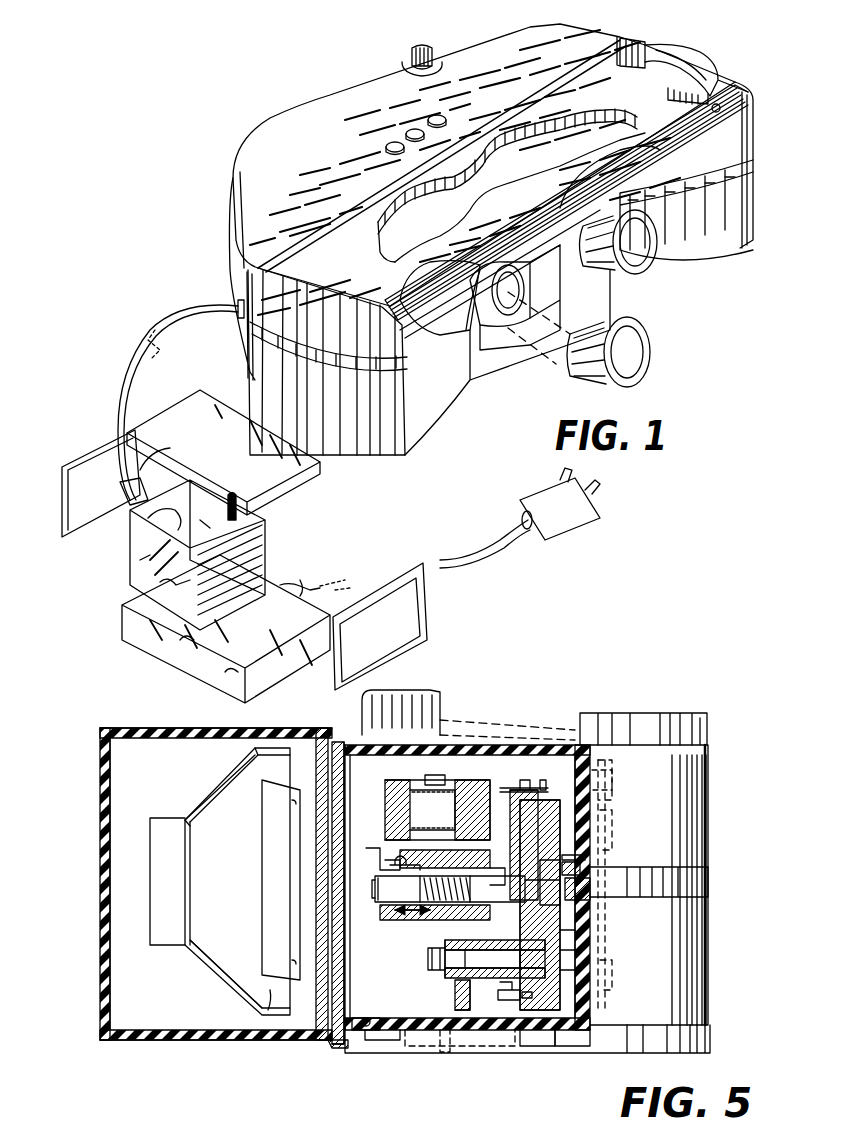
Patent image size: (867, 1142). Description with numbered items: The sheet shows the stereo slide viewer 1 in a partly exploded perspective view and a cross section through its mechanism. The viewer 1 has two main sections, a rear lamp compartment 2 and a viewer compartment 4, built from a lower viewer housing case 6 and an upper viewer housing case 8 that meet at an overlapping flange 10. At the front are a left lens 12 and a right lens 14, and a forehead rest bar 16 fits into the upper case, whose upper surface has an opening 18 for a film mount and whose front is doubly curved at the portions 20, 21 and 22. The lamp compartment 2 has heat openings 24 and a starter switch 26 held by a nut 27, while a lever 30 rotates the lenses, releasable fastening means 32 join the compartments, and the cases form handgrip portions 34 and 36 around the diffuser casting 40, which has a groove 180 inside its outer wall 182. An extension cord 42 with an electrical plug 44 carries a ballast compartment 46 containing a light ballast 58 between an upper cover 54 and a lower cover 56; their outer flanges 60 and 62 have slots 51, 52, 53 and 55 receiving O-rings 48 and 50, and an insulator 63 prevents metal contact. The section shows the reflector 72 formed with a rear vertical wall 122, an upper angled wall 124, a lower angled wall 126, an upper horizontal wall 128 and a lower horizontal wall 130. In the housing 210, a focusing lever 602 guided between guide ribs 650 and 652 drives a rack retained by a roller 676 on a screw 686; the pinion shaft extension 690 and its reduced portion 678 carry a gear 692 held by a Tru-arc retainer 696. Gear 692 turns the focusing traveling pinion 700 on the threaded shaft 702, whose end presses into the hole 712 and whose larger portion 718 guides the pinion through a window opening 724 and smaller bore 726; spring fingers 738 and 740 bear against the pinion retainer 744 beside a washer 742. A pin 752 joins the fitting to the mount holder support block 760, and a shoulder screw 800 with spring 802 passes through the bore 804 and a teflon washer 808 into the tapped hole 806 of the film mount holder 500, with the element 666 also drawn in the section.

In FIG. 1, the viewer 1 is at (288, 74).
In FIG. 1, the rear lamp compartment 2 is at (276, 132).
In FIG. 5, the rear lamp compartment 2 is at (134, 727).
In FIG. 1, the viewer compartment 4 is at (420, 390).
In FIG. 1, the lower viewer housing case 6 is at (368, 436).
In FIG. 1, the upper viewer housing case 8 is at (348, 349).
In FIG. 1, the overlapping flange 10 is at (745, 166).
In FIG. 5, the overlapping flange 10 is at (712, 882).
In FIG. 1, the left lens 12 is at (620, 320).
In FIG. 1, the right lens 14 is at (653, 252).
In FIG. 1, the forehead rest bar 16 is at (718, 104).
In FIG. 1, the opening 18 is at (514, 169).
In FIG. 1, the doubly curved portion 20 is at (418, 272).
In FIG. 1, the doubly curved portion 21 is at (646, 138).
In FIG. 1, the doubly curved portion 22 is at (578, 196).
In FIG. 1, the openings 24 is at (415, 130).
In FIG. 1, the starter switch 26 is at (417, 45).
In FIG. 1, the nut 27 is at (404, 62).
In FIG. 1, the lever 30 is at (641, 38).
In FIG. 1, the releasable fastening means 32 is at (238, 308).
In FIG. 1, the extended handgrip portion 34 is at (700, 55).
In FIG. 1, the extended handgrip portion 36 is at (305, 282).
In FIG. 1, the diffuser casting 40 is at (242, 246).
In FIG. 5, the diffuser casting 40 is at (334, 1052).
In FIG. 1, the extension cord 42 is at (122, 378).
In FIG. 1, the electrical plug 44 is at (535, 500).
In FIG. 1, the ballast compartment 46 is at (104, 560).
In FIG. 1, the O-ring 48 is at (62, 462).
In FIG. 1, the O-ring 50 is at (418, 618).
In FIG. 1, the slot 51 is at (148, 640).
In FIG. 1, the slot 52 is at (230, 674).
In FIG. 1, the slot 53 is at (132, 496).
In FIG. 1, the upper cover 54 is at (252, 474).
In FIG. 1, the slot 55 is at (238, 515).
In FIG. 1, the lower cover 56 is at (280, 649).
In FIG. 1, the light ballast 58 is at (318, 592).
In FIG. 1, the outer flange 60 is at (145, 462).
In FIG. 1, the outer flange 62 is at (185, 642).
In FIG. 1, the insulator 63 is at (148, 570).
In FIG. 5, the reflector 72 is at (190, 797).
In FIG. 5, the rear vertical wall 122 is at (188, 884).
In FIG. 5, the upper angled wall 124 is at (240, 778).
In FIG. 5, the lower angled wall 126 is at (218, 990).
In FIG. 5, the upper horizontal wall 128 is at (276, 752).
In FIG. 5, the lower horizontal wall 130 is at (268, 1012).
In FIG. 5, the groove 180 is at (367, 1016).
In FIG. 5, the outer wall 182 is at (338, 1050).
In FIG. 5, the housing 210 is at (588, 808).
In FIG. 5, the film mount holder 500 is at (522, 782).
In FIG. 5, the focusing lever 602 is at (462, 1044).
In FIG. 5, the guide rib 650 is at (388, 1040).
In FIG. 5, the guide rib 652 is at (545, 1046).
In FIG. 5, the frame wall 666 is at (600, 1002).
In FIG. 5, the roller 676 is at (518, 1046).
In FIG. 5, the reduced portion 678 is at (430, 958).
In FIG. 5, the screw 686 is at (500, 1000).
In FIG. 5, the shaft extension 690 is at (600, 946).
In FIG. 5, the gear 692 is at (460, 1002).
In FIG. 5, the Tru-arc retainer 696 is at (455, 985).
In FIG. 5, the focusing traveling pinion 700 is at (448, 905).
In FIG. 5, the shaft 702 is at (375, 882).
In FIG. 5, the hole 712 is at (590, 872).
In FIG. 5, the shaft portion 718 is at (590, 850).
In FIG. 5, the window opening 724 is at (521, 896).
In FIG. 5, the smaller diameter bore 726 is at (590, 836).
In FIG. 5, the spring finger 738 is at (390, 866).
In FIG. 5, the spring finger 740 is at (382, 915).
In FIG. 5, the washer 742 is at (600, 922).
In FIG. 5, the pinion retainer 744 is at (395, 852).
In FIG. 5, the pin 752 is at (404, 850).
In FIG. 5, the mount holder support block 760 is at (444, 800).
In FIG. 5, the shoulder screw 800 is at (470, 748).
In FIG. 5, the spring 802 is at (410, 790).
In FIG. 5, the bore 804 is at (470, 790).
In FIG. 5, the tapped hole 806 is at (548, 782).
In FIG. 5, the teflon washer 808 is at (510, 833).